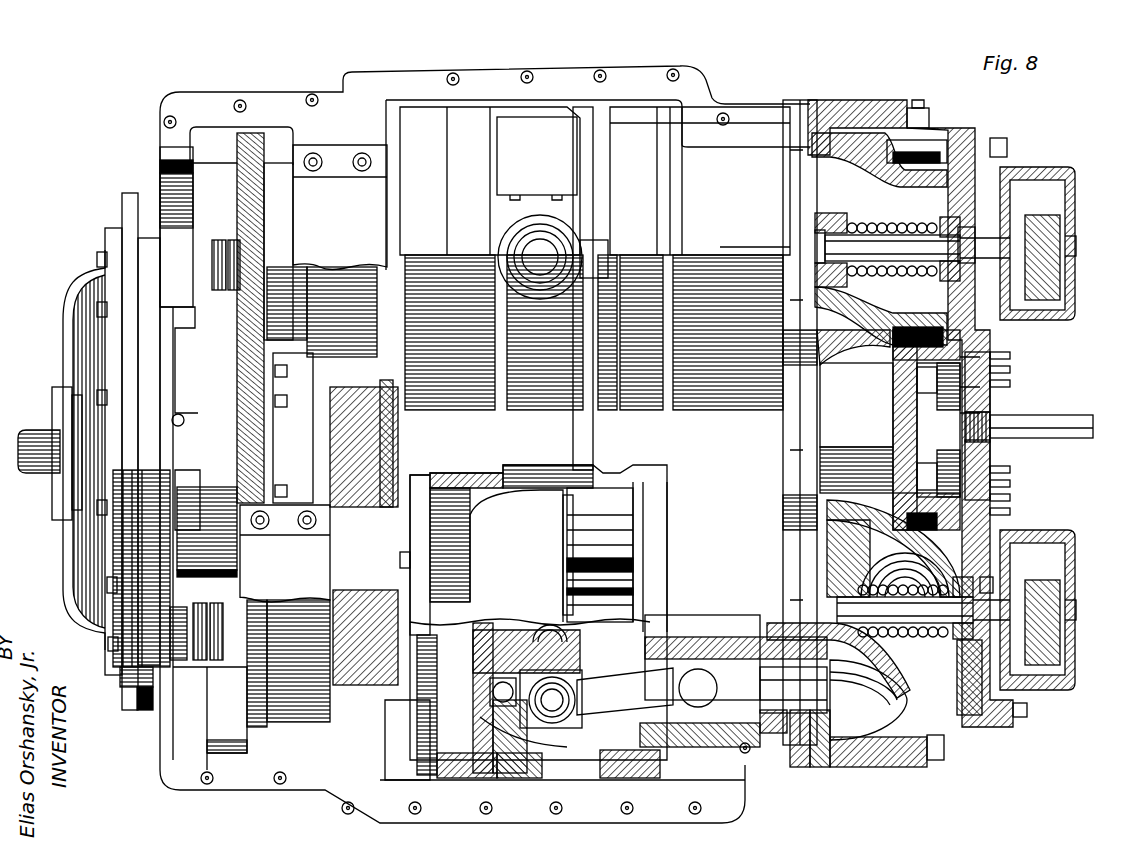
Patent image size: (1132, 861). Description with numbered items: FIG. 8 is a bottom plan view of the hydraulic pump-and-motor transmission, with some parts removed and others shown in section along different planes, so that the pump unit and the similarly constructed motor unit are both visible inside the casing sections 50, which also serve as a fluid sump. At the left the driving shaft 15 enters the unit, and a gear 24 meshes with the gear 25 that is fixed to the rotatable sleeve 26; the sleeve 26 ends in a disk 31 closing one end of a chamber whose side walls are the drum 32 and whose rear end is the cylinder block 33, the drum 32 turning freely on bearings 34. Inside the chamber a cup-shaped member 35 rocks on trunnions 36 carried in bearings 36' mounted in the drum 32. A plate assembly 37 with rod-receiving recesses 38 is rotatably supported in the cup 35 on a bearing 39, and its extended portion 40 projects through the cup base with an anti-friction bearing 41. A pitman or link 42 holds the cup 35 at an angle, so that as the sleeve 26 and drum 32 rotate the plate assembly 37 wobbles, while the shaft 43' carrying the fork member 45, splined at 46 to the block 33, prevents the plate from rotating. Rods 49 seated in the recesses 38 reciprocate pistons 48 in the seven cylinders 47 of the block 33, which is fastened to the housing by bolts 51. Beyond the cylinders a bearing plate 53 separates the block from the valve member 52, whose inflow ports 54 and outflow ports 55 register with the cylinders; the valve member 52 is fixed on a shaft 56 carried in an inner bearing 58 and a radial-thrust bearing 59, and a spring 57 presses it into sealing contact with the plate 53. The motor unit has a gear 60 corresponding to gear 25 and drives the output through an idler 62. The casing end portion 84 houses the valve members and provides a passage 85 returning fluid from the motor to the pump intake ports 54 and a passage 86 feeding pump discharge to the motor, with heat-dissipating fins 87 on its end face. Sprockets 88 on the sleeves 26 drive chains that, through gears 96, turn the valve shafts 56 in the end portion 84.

The driving shaft 15 is at (33, 440).
The gear 24 is at (235, 355).
The gear 25 is at (262, 232).
The sleeve 26 is at (276, 245).
The disk 31 is at (420, 740).
The drum 32 is at (497, 218).
The cylinder block 33 is at (755, 783).
The bearings 34 is at (655, 772).
The cup-shaped member 35 is at (538, 612).
The trunnions 36 is at (522, 787).
The bearings 36' is at (482, 783).
The plate assembly 37 is at (582, 735).
The rod receiving recesses 38 is at (578, 716).
The bearing 39 is at (490, 700).
The extended portion 40 is at (473, 660).
The anti-friction bearing 41 is at (493, 670).
The pitman or link 42 is at (443, 617).
The shaft 43' is at (545, 611).
The fixed fork member 45 is at (645, 635).
The splining 46 is at (700, 640).
The cylinders 47 is at (795, 717).
The pistons 48 is at (700, 739).
The rods 49 is at (596, 545).
The casing or housing sections 50 is at (836, 94).
The bolts 51 is at (950, 745).
The valve member 52 is at (923, 209).
The bearing plate 53 is at (800, 183).
The inflow ports 54 is at (820, 330).
The outflow ports 55 is at (825, 550).
The shaft 56 is at (857, 240).
The spring 57 is at (905, 225).
The inner bearing 58 is at (800, 670).
The bearing 59 is at (975, 640).
The gear 60 is at (350, 570).
The idler 62 is at (390, 450).
The end portion of casing 84 is at (1000, 378).
The passage 85 is at (975, 365).
The passage 86 is at (880, 500).
The heat dissipating fins 87 is at (1010, 388).
The sprockets 88 is at (160, 172).
The gears 96 is at (1045, 285).